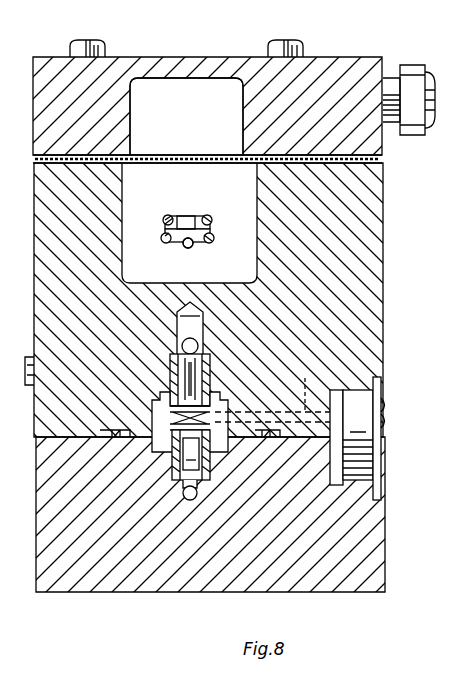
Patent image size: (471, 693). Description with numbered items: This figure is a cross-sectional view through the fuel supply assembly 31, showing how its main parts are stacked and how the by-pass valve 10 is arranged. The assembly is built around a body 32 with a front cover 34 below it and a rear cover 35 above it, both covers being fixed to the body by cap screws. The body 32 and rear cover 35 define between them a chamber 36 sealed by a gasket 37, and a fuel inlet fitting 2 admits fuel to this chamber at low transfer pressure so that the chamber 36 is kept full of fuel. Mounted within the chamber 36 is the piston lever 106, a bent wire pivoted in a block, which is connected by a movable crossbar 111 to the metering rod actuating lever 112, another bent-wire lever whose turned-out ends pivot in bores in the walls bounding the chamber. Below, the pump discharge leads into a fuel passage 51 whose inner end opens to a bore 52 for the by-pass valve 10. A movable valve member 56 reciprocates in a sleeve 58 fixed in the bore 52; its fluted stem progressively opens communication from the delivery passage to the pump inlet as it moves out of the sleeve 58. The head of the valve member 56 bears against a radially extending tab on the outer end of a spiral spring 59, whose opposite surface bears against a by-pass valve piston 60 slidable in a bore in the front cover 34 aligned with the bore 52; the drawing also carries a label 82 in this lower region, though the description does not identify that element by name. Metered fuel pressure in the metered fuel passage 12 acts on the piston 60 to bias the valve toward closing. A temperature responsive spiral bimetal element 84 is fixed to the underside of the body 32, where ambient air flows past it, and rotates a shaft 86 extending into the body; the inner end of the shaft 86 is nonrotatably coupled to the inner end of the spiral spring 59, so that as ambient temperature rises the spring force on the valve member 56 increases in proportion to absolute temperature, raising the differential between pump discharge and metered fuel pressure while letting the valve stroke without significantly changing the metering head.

The fuel supply assembly 31 is at (334, 38).
The fuel inlet fitting 2 is at (408, 72).
The rear cover 35 is at (143, 68).
The chamber 36 is at (180, 95).
The gasket 37 is at (35, 158).
The body 32 is at (357, 297).
The front cover 34 is at (85, 562).
The metering rod actuating lever 112 is at (186, 215).
The movable crossbar 111 is at (182, 246).
The piston lever 106 is at (195, 247).
The bore 52 is at (177, 322).
The by-pass valve 10 is at (237, 337).
The fuel passage 51 is at (182, 344).
The sleeve 58 is at (202, 366).
The movable valve member 56 is at (170, 380).
The spiral spring 59 is at (175, 422).
The shaft 86 is at (275, 395).
The by-pass valve piston 60 is at (172, 466).
The pin bore 82 is at (208, 464).
The metered fuel passage 12 is at (190, 500).
The temperature responsive spiral bimetal element 84 is at (381, 458).